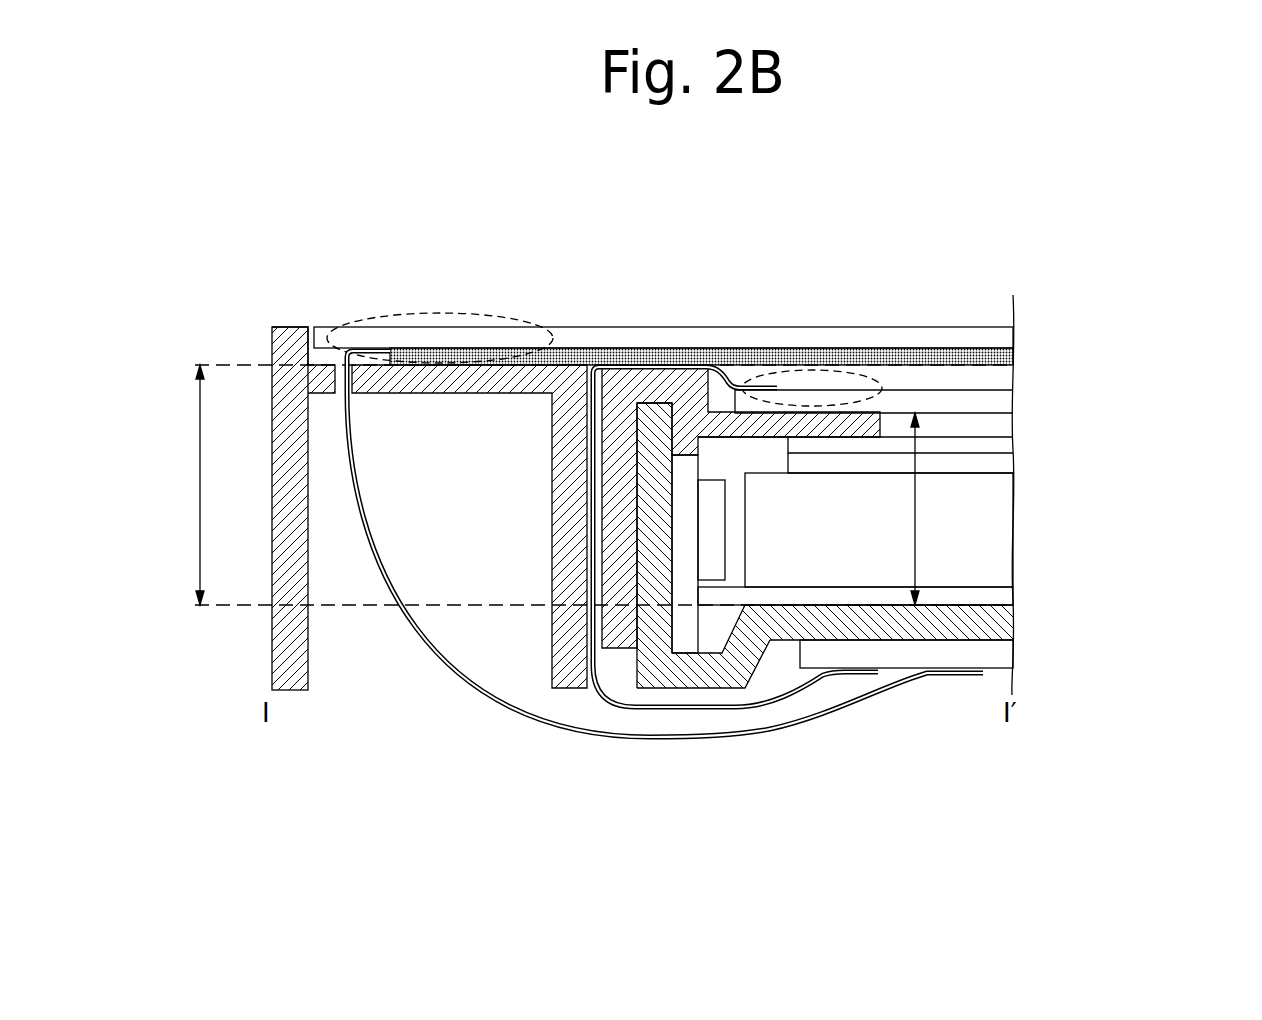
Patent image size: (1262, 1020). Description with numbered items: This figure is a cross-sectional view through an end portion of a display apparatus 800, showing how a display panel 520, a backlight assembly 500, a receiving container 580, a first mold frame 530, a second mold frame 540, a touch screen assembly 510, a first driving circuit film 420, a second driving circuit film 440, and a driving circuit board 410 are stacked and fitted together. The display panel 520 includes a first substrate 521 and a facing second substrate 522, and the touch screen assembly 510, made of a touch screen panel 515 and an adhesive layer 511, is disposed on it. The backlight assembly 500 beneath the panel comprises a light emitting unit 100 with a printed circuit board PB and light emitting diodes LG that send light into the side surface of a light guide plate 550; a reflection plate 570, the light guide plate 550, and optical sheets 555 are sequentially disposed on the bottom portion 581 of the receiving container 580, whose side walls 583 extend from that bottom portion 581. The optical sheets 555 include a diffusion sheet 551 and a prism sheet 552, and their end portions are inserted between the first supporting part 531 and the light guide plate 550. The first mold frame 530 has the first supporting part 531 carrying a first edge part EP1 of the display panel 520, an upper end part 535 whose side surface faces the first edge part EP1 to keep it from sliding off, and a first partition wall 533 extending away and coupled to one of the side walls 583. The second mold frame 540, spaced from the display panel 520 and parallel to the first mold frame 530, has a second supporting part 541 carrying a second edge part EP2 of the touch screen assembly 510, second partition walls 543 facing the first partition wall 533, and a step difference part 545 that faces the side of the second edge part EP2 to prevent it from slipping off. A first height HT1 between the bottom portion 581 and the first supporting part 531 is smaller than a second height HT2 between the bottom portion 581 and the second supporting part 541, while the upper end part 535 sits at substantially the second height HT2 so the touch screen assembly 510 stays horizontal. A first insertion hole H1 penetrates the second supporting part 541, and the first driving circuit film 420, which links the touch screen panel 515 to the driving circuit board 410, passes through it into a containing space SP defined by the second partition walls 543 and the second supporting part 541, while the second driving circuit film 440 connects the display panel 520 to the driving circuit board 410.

The display apparatus 800 is at (950, 258).
The backlight assembly 500 is at (1160, 445).
The touch screen assembly 510 is at (1100, 312).
The touch screen panel 515 is at (1015, 333).
The adhesive layer 511 is at (1015, 357).
The display panel 520 is at (1100, 368).
The second substrate 522 is at (1005, 378).
The first substrate 521 is at (1005, 400).
The optical sheets 555 is at (1100, 435).
The prism sheet 552 is at (1005, 443).
The diffusion sheet 551 is at (1005, 465).
The light guide plate 550 is at (1000, 531).
The reflection plate 570 is at (1005, 595).
The receiving container 580 is at (1005, 625).
The bottom portion 581 is at (695, 680).
The side wall 583 is at (650, 608).
The first mold frame 530 is at (717, 260).
The first supporting part 531 is at (722, 382).
The first partition wall 533 is at (612, 483).
The upper end part 535 is at (650, 385).
The second mold frame 540 is at (388, 260).
The second supporting part 541 is at (322, 373).
The second partition wall 543 is at (283, 482).
The step difference part 545 is at (290, 333).
The light emitting unit 100 is at (478, 490).
The printed circuit board PB is at (685, 497).
The light emitting diode LG is at (710, 540).
The driving circuit board 410 is at (1005, 656).
The first driving circuit film 420 is at (563, 732).
The second driving circuit film 440 is at (763, 710).
The first edge part EP1 is at (812, 370).
The second edge part EP2 is at (473, 313).
The first insertion hole H1 is at (347, 390).
The containing space SP is at (382, 667).
The first height HT1 is at (935, 509).
The second height HT2 is at (581, 485).